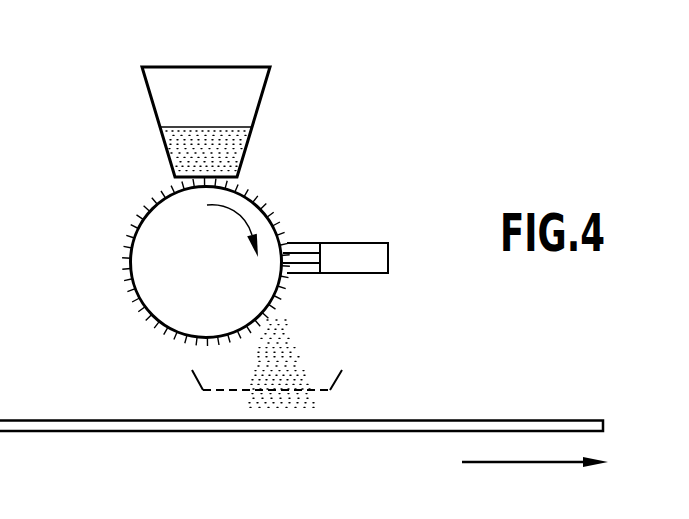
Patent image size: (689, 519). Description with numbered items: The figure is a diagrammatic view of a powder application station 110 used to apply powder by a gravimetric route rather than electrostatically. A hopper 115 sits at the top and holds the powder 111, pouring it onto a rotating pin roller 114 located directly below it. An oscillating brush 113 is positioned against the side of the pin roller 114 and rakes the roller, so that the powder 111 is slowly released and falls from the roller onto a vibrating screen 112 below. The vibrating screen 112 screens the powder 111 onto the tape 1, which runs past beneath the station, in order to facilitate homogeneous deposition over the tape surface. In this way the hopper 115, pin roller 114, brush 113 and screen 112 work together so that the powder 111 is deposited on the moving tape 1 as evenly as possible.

The tape 1 is at (542, 421).
The powder application station 110 is at (410, 105).
The powder 111 is at (220, 152).
The vibrating screen 112 is at (342, 380).
The oscillating brush 113 is at (375, 257).
The rotating pin roller 114 is at (146, 246).
The hopper 115 is at (200, 87).